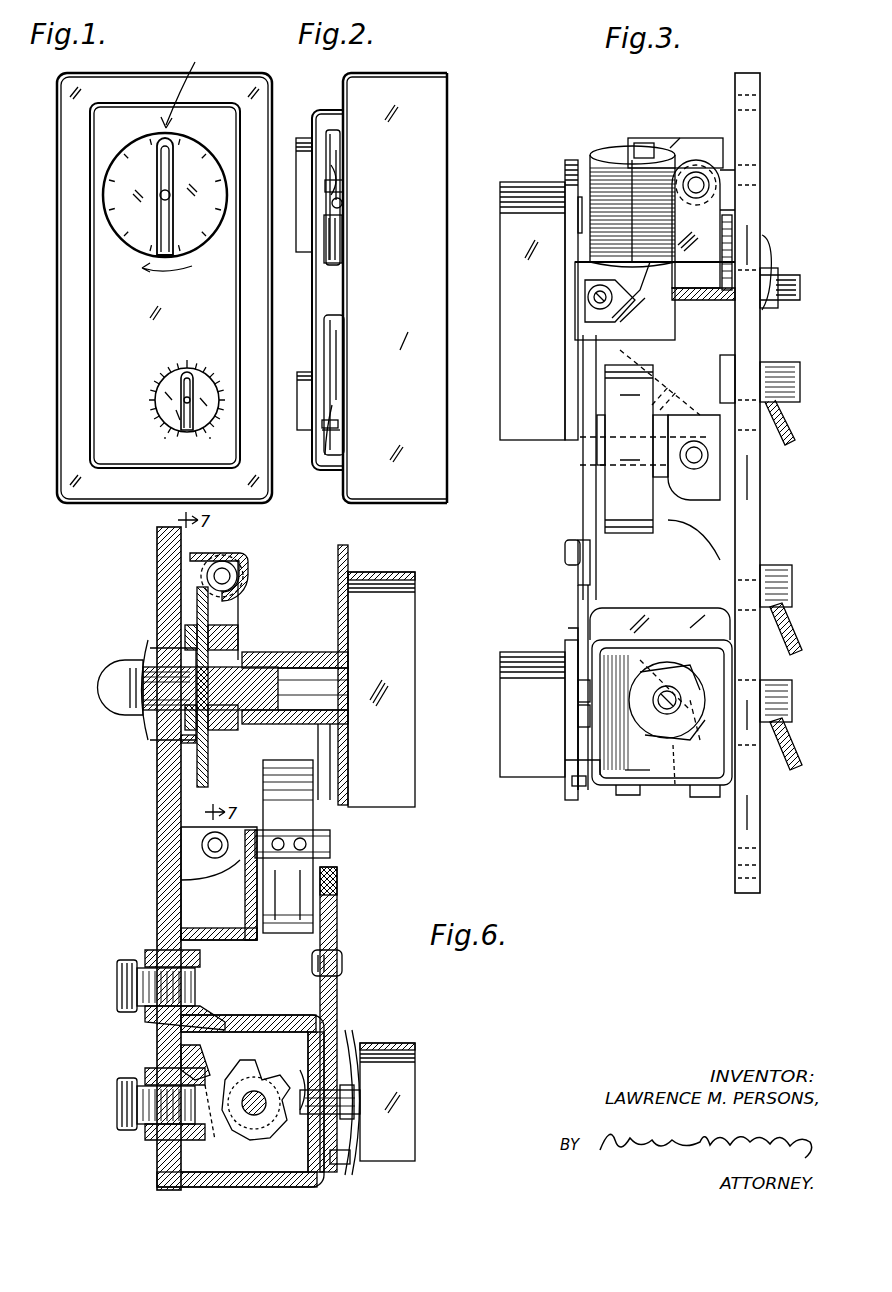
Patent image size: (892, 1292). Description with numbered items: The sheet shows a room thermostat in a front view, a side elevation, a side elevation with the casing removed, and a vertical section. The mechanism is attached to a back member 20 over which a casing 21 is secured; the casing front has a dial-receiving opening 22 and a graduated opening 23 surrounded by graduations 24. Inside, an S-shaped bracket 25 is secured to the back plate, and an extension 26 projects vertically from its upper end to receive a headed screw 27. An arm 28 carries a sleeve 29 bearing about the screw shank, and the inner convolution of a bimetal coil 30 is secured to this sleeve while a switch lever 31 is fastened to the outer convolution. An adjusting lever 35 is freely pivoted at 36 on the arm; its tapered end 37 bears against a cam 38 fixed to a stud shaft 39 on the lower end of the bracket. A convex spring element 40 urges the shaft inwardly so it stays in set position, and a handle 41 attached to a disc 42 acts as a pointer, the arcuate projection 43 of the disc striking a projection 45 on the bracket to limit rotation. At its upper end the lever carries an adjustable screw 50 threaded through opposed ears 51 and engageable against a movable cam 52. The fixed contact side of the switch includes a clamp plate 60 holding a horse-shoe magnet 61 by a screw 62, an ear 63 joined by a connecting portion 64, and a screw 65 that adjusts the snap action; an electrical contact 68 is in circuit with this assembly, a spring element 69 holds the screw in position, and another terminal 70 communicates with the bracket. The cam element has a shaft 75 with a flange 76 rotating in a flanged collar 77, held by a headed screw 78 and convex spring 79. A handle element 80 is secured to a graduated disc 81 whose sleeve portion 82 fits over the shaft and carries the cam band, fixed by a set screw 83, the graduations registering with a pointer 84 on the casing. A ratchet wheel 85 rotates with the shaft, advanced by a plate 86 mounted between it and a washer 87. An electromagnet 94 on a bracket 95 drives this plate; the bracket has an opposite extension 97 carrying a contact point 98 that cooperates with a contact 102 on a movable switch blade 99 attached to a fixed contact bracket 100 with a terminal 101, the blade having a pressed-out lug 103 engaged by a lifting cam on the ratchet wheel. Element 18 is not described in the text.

In FIG. 3, the nut 18 is at (772, 270).
In FIG. 3, the back member 20 is at (758, 190).
In FIG. 6, the back member 20 is at (160, 880).
In FIG. 1, the casing 21 is at (75, 350).
In FIG. 2, the casing 21 is at (425, 152).
In FIG. 1, the dial-receiving opening 22 is at (212, 150).
In FIG. 2, the dial-receiving opening 22 is at (327, 290).
In FIG. 1, the graduated opening 23 is at (156, 405).
In FIG. 1, the graduations 24 is at (215, 383).
In FIG. 2, the bracket 25 is at (335, 410).
In FIG. 3, the bracket 25 is at (625, 645).
In FIG. 6, the bracket 25 is at (258, 1030).
In FIG. 3, the extension 26 is at (683, 500).
In FIG. 6, the extension 26 is at (248, 903).
In FIG. 3, the headed screw 27 is at (680, 400).
In FIG. 6, the headed screw 27 is at (338, 858).
In FIG. 3, the arm 28 is at (590, 578).
In FIG. 6, the arm 28 is at (340, 905).
In FIG. 6, the sleeve 29 is at (290, 920).
In FIG. 3, the bimetal coil 30 is at (610, 488).
In FIG. 6, the bimetal coil 30 is at (318, 762).
In FIG. 3, the switch lever 31 is at (690, 548).
In FIG. 2, the adjusting lever 35 is at (335, 348).
In FIG. 3, the adjusting lever 35 is at (578, 596).
In FIG. 6, the adjusting lever 35 is at (340, 995).
In FIG. 3, the pivot 36 is at (565, 552).
In FIG. 6, the pivot 36 is at (345, 956).
In FIG. 3, the tapered end 37 is at (580, 692).
In FIG. 3, the cam 38 is at (578, 715).
In FIG. 6, the cam 38 is at (355, 1120).
In FIG. 1, the stud shaft 39 is at (192, 400).
In FIG. 3, the stud shaft 39 is at (628, 795).
In FIG. 6, the stud shaft 39 is at (362, 1100).
In FIG. 6, the convex spring element 40 is at (300, 1080).
In FIG. 1, the handle 41 is at (188, 420).
In FIG. 2, the handle 41 is at (300, 400).
In FIG. 3, the handle 41 is at (540, 785).
In FIG. 6, the handle 41 is at (420, 1062).
In FIG. 1, the disc 42 is at (180, 425).
In FIG. 2, the disc 42 is at (330, 450).
In FIG. 3, the disc 42 is at (565, 790).
In FIG. 6, the disc 42 is at (358, 1033).
In FIG. 3, the arcuate projection 43 is at (568, 631).
In FIG. 2, the projection 45 is at (338, 424).
In FIG. 3, the projection 45 is at (580, 788).
In FIG. 6, the projection 45 is at (352, 1160).
In FIG. 2, the adjustable screw 50 is at (341, 205).
In FIG. 3, the adjustable screw 50 is at (590, 298).
In FIG. 3, the ears 51 is at (588, 310).
In FIG. 2, the cam 52 is at (330, 186).
In FIG. 3, the cam 52 is at (585, 290).
In FIG. 6, the cam 52 is at (340, 654).
In FIG. 3, the clamp plate 60 is at (642, 620).
In FIG. 3, the horse-shoe magnet 61 is at (700, 798).
In FIG. 3, the screw 62 is at (665, 660).
In FIG. 3, the ear 63 is at (645, 788).
In FIG. 6, the ear 63 is at (256, 1130).
In FIG. 3, the connecting portion 64 is at (672, 663).
In FIG. 6, the connecting portion 64 is at (212, 1050).
In FIG. 3, the screw 65 is at (680, 698).
In FIG. 6, the screw 65 is at (268, 1110).
In FIG. 3, the electrical contact 68 is at (790, 724).
In FIG. 6, the electrical contact 68 is at (150, 1138).
In FIG. 3, the spring element 69 is at (675, 795).
In FIG. 6, the spring element 69 is at (218, 1135).
In FIG. 3, the terminal 70 is at (785, 572).
In FIG. 6, the terminal 70 is at (150, 962).
In FIG. 1, the shaft 75 is at (160, 197).
In FIG. 3, the shaft 75 is at (776, 290).
In FIG. 6, the shaft 75 is at (272, 670).
In FIG. 6, the flange 76 is at (180, 742).
In FIG. 3, the flanged collar 77 is at (708, 270).
In FIG. 6, the flanged collar 77 is at (165, 700).
In FIG. 6, the headed screw 78 is at (130, 690).
In FIG. 3, the convex spring 79 is at (768, 252).
In FIG. 6, the convex spring 79 is at (150, 652).
In FIG. 1, the handle element 80 is at (150, 248).
In FIG. 2, the handle element 80 is at (303, 255).
In FIG. 3, the handle element 80 is at (522, 405).
In FIG. 6, the handle element 80 is at (412, 623).
In FIG. 1, the graduated disc 81 is at (132, 162).
In FIG. 2, the graduated disc 81 is at (345, 130).
In FIG. 3, the graduated disc 81 is at (573, 160).
In FIG. 6, the graduated disc 81 is at (350, 556).
In FIG. 6, the sleeve portion 82 is at (302, 655).
In FIG. 6, the set screw 83 is at (262, 736).
In FIG. 1, the pointer 84 is at (183, 84).
In FIG. 3, the ratchet wheel 85 is at (732, 190).
In FIG. 6, the ratchet wheel 85 is at (196, 598).
In FIG. 6, the plate 86 is at (235, 614).
In FIG. 6, the washer 87 is at (232, 640).
In FIG. 2, the electromagnet 94 is at (341, 172).
In FIG. 3, the electromagnet 94 is at (608, 165).
In FIG. 3, the bracket 95 is at (690, 138).
In FIG. 6, the bracket 95 is at (205, 553).
In FIG. 3, the extension 97 is at (687, 170).
In FIG. 6, the extension 97 is at (228, 568).
In FIG. 6, the contact point 98 is at (230, 580).
In FIG. 3, the movable switch blade 99 is at (700, 232).
In FIG. 6, the movable switch blade 99 is at (250, 640).
In FIG. 3, the fixed contact bracket 100 is at (725, 358).
In FIG. 6, the fixed contact bracket 100 is at (185, 845).
In FIG. 3, the terminal 101 is at (785, 372).
In FIG. 3, the contact 102 is at (701, 170).
In FIG. 3, the pressed-out lug 103 is at (685, 305).